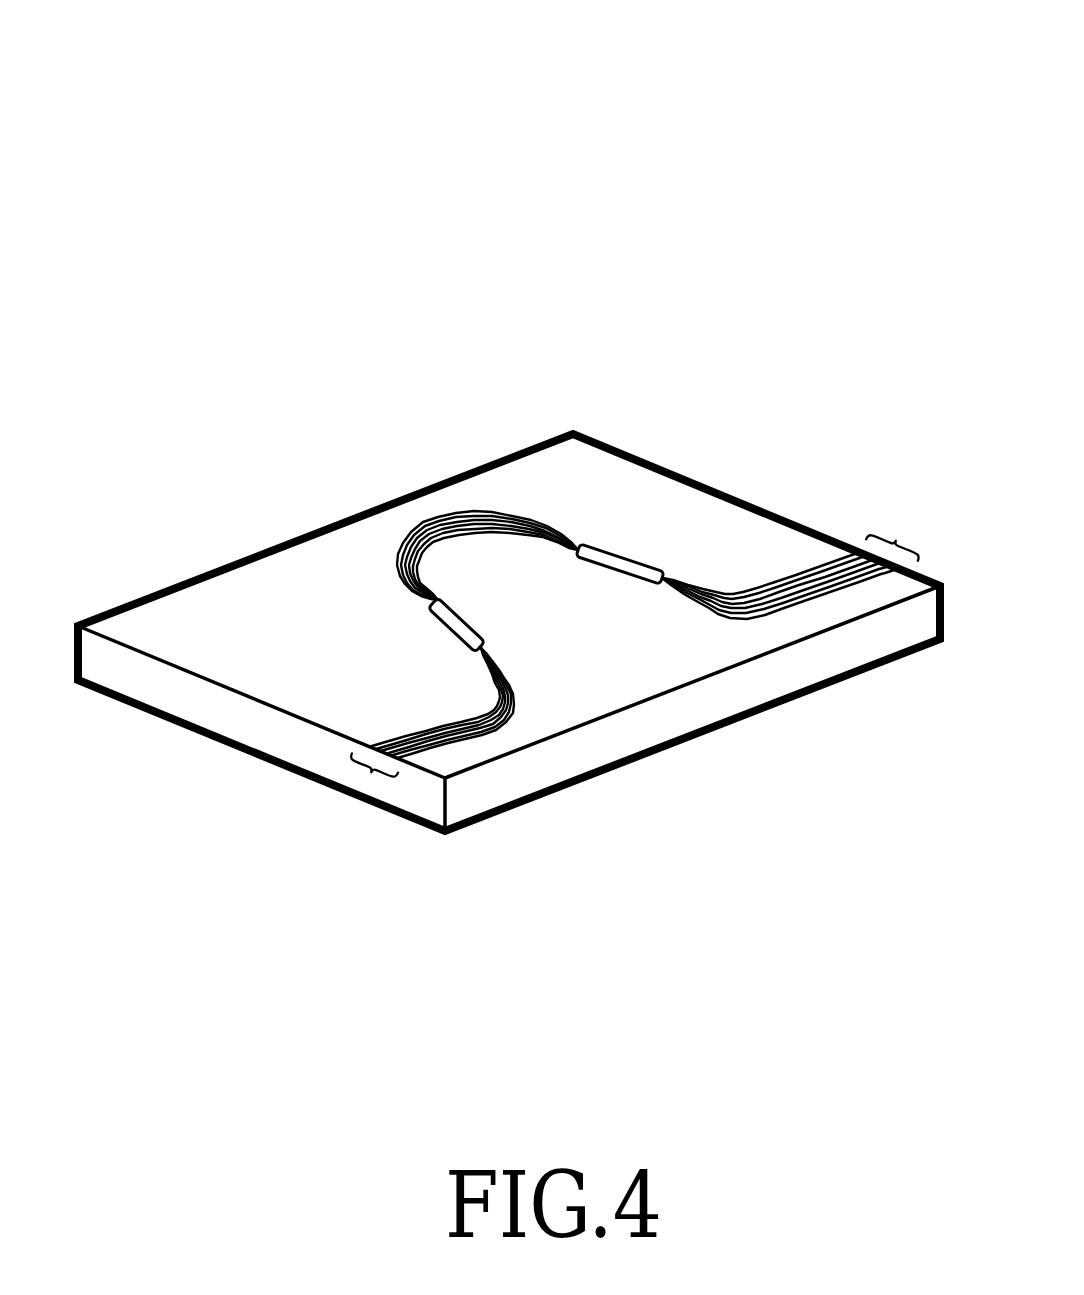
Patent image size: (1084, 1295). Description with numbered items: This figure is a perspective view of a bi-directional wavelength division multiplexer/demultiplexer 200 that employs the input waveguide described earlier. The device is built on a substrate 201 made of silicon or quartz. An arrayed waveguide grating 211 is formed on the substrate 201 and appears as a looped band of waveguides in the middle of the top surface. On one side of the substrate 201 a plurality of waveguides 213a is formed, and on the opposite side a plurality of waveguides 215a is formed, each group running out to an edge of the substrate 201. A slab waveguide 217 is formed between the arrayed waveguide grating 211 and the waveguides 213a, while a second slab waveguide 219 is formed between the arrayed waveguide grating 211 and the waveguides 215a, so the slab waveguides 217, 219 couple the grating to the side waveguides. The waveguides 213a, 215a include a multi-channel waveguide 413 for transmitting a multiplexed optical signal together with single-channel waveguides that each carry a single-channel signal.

The bi-directional wavelength division multiplexer/demultiplexer 200 is at (559, 44).
The substrate 201 is at (650, 733).
The arrayed waveguide grating 211 is at (437, 537).
The waveguides 213a is at (371, 772).
The waveguides 215a is at (911, 525).
The slab waveguide 217 is at (432, 618).
The slab waveguide 219 is at (620, 552).
The multi-channel waveguide 413 is at (407, 760).